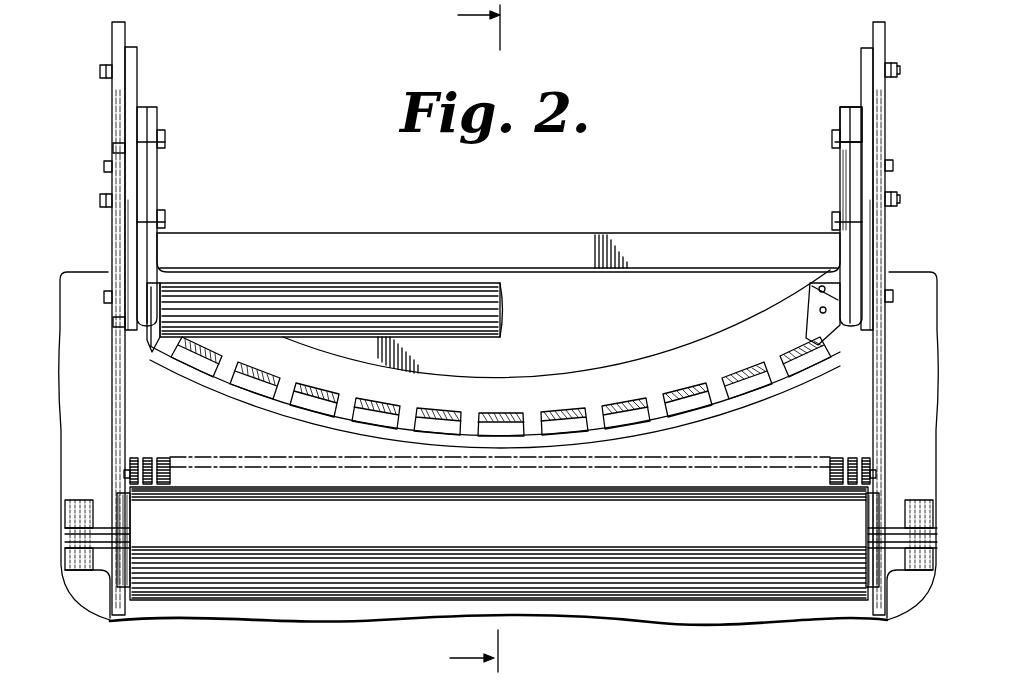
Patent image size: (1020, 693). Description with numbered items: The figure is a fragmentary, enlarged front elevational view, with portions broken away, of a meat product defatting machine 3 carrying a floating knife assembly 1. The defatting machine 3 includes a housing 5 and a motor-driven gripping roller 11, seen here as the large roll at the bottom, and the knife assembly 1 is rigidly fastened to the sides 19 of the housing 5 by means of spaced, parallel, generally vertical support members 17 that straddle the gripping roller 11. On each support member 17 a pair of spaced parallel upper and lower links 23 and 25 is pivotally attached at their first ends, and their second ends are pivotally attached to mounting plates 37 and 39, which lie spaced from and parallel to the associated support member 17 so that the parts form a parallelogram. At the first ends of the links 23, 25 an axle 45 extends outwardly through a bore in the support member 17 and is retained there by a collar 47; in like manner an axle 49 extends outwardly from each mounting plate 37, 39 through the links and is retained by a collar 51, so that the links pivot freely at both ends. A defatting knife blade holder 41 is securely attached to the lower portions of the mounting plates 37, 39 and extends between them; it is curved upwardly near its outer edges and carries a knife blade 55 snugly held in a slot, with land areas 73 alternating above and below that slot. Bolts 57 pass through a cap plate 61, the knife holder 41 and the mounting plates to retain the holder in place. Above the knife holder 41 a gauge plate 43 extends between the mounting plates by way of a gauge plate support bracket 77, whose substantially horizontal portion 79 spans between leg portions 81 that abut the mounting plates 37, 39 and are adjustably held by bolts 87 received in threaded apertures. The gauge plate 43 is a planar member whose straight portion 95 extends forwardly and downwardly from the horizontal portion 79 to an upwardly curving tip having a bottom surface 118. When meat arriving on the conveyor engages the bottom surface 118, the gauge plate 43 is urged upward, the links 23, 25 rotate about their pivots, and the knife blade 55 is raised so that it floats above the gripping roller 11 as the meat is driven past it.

The floating knife assembly 1 is at (434, 204).
The defatting machine 3 is at (78, 442).
The housing 5 is at (920, 456).
The gripping roller 11 is at (832, 453).
The support members 17 is at (112, 24).
The sides 19 is at (87, 391).
The upper links 23 is at (137, 63).
The lower links 25 is at (125, 231).
The mounting plate 37 is at (855, 107).
The mounting plate 39 is at (143, 107).
The defatting knife blade holder 41 is at (587, 376).
The gauge plate 43 is at (447, 338).
The axle 45 is at (899, 71).
The collar 47 is at (890, 63).
The axle 49 is at (104, 168).
The collar 51 is at (113, 148).
The knife blade 55 is at (790, 384).
The bolts 57 is at (818, 311).
The cap plate 61 is at (827, 323).
The land areas 73 is at (297, 408).
The gauge plate support bracket 77 is at (840, 106).
The horizontal portion 79 is at (561, 237).
The leg portions 81 is at (840, 179).
The bolts 87 is at (165, 140).
The straight portion 95 is at (308, 290).
The bottom surface 118 is at (283, 337).